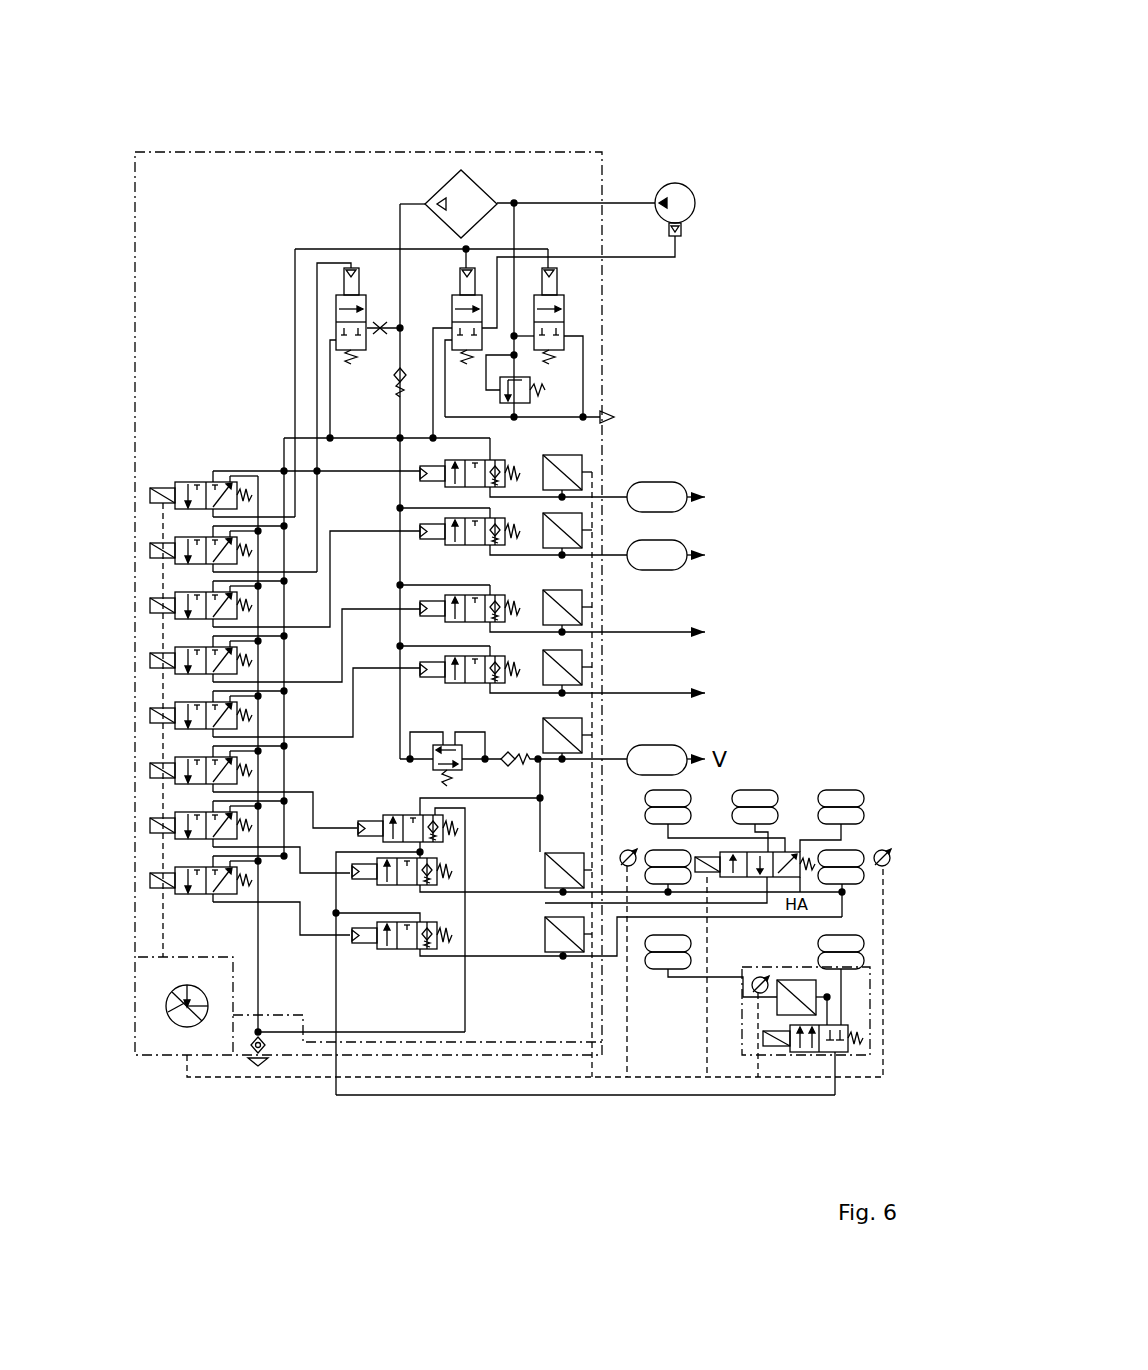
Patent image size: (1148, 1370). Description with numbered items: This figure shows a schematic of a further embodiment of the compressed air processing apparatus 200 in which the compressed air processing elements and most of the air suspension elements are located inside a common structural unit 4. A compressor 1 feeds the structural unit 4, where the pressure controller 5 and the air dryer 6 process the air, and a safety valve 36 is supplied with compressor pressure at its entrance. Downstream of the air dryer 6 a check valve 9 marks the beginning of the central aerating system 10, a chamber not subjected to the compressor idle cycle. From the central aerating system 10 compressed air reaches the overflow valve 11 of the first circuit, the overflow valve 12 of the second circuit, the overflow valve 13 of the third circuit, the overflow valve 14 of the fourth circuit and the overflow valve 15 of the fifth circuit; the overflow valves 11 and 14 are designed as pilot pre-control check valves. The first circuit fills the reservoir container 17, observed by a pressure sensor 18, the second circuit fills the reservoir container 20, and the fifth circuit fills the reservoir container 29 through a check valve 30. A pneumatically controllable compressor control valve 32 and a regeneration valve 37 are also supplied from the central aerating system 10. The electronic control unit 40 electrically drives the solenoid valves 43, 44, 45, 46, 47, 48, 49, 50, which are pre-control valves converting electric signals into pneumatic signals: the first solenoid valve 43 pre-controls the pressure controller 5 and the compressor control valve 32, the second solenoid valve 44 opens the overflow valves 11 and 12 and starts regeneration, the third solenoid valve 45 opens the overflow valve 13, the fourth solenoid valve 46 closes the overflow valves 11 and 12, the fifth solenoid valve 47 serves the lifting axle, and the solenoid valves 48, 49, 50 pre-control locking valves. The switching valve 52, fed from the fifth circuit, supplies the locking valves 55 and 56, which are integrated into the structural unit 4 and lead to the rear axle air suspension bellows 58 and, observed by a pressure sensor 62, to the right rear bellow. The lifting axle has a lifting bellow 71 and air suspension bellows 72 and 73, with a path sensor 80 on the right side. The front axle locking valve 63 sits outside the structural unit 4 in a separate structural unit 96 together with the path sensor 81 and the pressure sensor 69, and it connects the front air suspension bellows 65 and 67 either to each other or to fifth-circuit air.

The compressed air processing apparatus 200 is at (150, 135).
The compressor 1 is at (678, 183).
The structural unit 4 is at (540, 145).
The pressure controller 5 is at (669, 316).
The air dryer 6 is at (476, 188).
The check valve 9 is at (393, 375).
The central aerating system 10 is at (398, 437).
The overflow valve 11 is at (615, 438).
The overflow valve 12 is at (604, 539).
The overflow valve 13 is at (604, 611).
The overflow valve 14 is at (604, 668).
The overflow valve 15 is at (631, 723).
The reservoir container 17 is at (719, 477).
The pressure sensor 18 is at (677, 455).
The reservoir container 20 is at (719, 534).
The reservoir container 29 is at (657, 858).
The check valve 30 is at (605, 747).
The compressor control valve 32 is at (430, 292).
The safety valve 36 is at (655, 372).
The regeneration valve 37 is at (336, 235).
The electronic control unit 40 is at (175, 973).
The first solenoid valve 43 is at (148, 494).
The second solenoid valve 44 is at (148, 549).
The third solenoid valve 45 is at (148, 604).
The fourth solenoid valve 46 is at (148, 659).
The fifth solenoid valve 47 is at (148, 714).
The sixth solenoid valve 48 is at (148, 769).
The seventh solenoid valve 49 is at (148, 824).
The solenoid valve 50 is at (148, 879).
The switching valve 52 is at (378, 806).
The locking valve 55 is at (557, 1028).
The locking valve 56 is at (398, 958).
The air suspension bellows 58 is at (677, 797).
The pressure sensor 62 is at (552, 940).
The locking valve 63 is at (857, 1066).
The air suspension bellow 65 is at (668, 945).
The air suspension bellows 67 is at (845, 940).
The pressure sensor 69 is at (802, 990).
The lifting bellow 71 is at (790, 853).
The air suspension bellows 72 is at (760, 795).
The air suspension bellows 73 is at (845, 795).
The path sensor 80 is at (892, 862).
The path sensor 81 is at (756, 978).
The structural unit 96 is at (870, 1032).